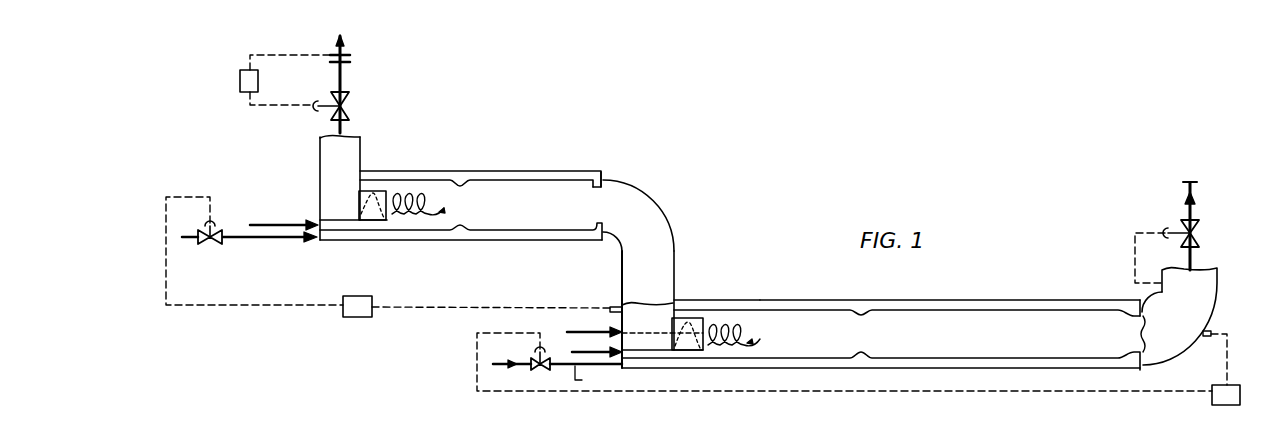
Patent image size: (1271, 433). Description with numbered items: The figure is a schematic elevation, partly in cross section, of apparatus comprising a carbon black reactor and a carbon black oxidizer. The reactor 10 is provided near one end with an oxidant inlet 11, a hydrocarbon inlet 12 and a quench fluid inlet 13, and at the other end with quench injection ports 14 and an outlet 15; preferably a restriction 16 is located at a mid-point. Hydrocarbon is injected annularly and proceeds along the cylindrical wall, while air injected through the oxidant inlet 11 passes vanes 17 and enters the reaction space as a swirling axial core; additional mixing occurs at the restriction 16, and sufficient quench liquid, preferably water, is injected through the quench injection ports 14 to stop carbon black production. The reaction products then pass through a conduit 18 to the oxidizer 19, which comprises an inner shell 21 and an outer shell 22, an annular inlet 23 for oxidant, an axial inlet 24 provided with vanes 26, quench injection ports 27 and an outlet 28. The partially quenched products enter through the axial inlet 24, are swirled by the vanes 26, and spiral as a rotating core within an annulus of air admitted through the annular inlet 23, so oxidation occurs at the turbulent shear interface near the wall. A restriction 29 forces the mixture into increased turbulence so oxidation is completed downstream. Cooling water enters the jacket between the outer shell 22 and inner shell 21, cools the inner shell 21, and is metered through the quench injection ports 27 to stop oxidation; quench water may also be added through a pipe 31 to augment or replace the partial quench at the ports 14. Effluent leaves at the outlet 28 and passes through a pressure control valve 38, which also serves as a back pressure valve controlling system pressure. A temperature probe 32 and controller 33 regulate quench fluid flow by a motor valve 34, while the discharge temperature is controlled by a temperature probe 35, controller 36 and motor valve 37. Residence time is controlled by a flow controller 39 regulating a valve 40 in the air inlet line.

The reactor 10 is at (493, 246).
The oxidant inlet 11 is at (321, 145).
The hydrocarbon inlet 12 is at (317, 223).
The quench fluid inlet 13 is at (317, 237).
The quench injection ports 14 is at (598, 171).
The outlet 15 is at (594, 208).
The restriction 16 is at (462, 184).
The vanes 17 is at (359, 200).
The conduit 18 is at (674, 265).
The oxidizer 19 is at (742, 299).
The inner shell 21 is at (918, 308).
The outer shell 22 is at (1076, 299).
The annular inlet 23 is at (617, 350).
The axial inlet 24 is at (672, 322).
The vanes 26 is at (669, 333).
The quench injection ports 27 is at (1145, 328).
The outlet 28 is at (1140, 335).
The restriction 29 is at (865, 352).
The pipe 31 is at (575, 328).
The temperature probe 32 is at (612, 307).
The controller 33 is at (360, 312).
The motor valve 34 is at (207, 244).
The temperature probe 35 is at (1205, 336).
The controller 36 is at (1233, 385).
The motor valve 37 is at (542, 370).
The pressure control valve 38 is at (1185, 246).
The flow controller 39 is at (240, 80).
The valve 40 is at (345, 107).